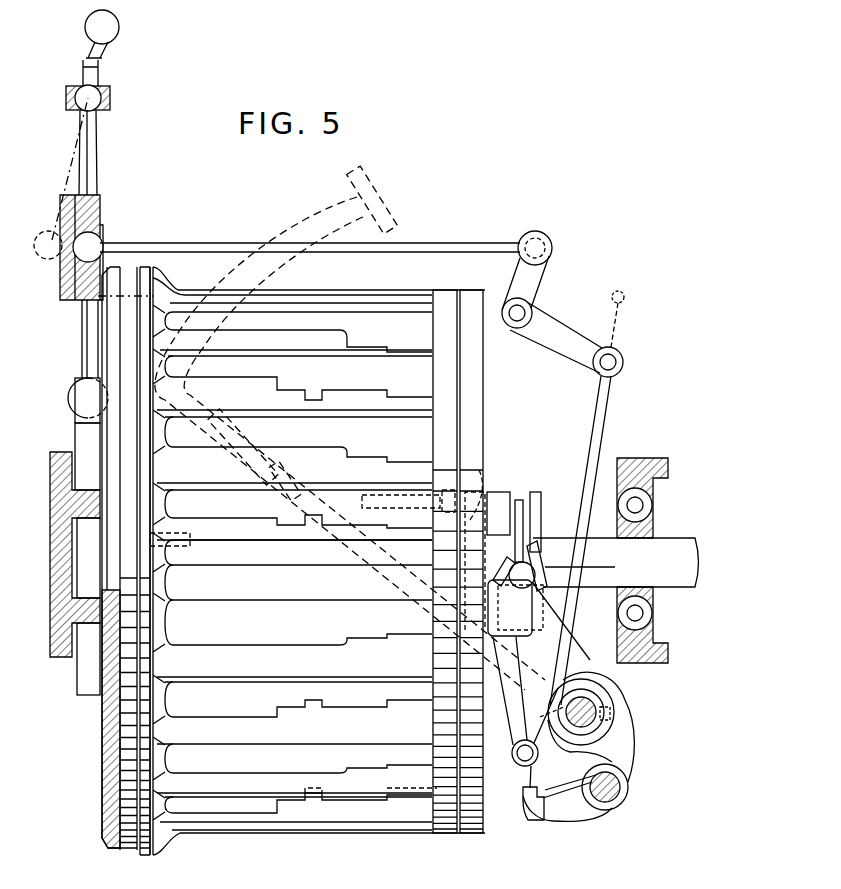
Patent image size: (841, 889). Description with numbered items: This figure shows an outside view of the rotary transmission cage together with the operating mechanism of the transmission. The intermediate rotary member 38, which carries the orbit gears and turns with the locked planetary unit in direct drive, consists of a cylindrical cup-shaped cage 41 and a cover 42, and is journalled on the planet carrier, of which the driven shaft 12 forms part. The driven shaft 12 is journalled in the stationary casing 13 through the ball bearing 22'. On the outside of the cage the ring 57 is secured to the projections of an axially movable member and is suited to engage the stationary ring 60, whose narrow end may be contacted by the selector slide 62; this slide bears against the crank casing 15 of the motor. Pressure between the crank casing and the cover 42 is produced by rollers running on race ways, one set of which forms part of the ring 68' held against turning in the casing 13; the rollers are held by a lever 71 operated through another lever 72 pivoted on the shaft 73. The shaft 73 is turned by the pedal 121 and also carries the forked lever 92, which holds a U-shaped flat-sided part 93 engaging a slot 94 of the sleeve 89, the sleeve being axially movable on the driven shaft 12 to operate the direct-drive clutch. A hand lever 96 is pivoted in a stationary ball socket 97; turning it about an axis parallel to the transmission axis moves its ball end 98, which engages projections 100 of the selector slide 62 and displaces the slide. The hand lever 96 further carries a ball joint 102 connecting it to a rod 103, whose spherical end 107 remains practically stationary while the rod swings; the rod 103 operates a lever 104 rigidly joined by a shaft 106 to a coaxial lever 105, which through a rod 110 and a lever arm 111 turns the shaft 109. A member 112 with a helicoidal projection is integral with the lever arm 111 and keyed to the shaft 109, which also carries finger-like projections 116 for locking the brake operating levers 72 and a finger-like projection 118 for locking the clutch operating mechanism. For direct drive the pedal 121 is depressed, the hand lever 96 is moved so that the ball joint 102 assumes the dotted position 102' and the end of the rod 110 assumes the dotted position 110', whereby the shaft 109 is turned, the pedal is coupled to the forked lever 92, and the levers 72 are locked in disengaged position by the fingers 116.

The hand lever 96 is at (104, 36).
The ball socket 97 is at (90, 98).
The dotted position of ball joint 102' is at (58, 178).
The ball joint 102 is at (105, 247).
The rod 103 is at (218, 247).
The pedal 121 is at (386, 203).
The spherical end of rod 107 is at (537, 252).
The lever 104 is at (530, 280).
The lever 105 is at (560, 332).
The dotted position of rod end 110' is at (648, 314).
The shaft 106 is at (517, 313).
The rod 110 is at (603, 540).
The stationary casing 13 is at (667, 463).
The ball bearing 22' is at (663, 559).
The driven shaft 12 is at (683, 553).
The projections 100 is at (93, 387).
The ball end 98 is at (70, 397).
The selector slide 62 is at (85, 443).
The crank casing 15 is at (63, 655).
The stationary ring 60 is at (113, 727).
The ring 57 is at (143, 850).
The intermediate rotary member 38 is at (293, 805).
The cage 41 is at (332, 805).
The cover 42 is at (437, 813).
The ring 68' is at (479, 577).
The lever 71 is at (520, 705).
The lever 72 is at (523, 750).
The shaft 73 is at (593, 703).
The finger like projection 118 is at (627, 720).
The member 112 is at (597, 758).
The shaft 109 is at (617, 777).
The finger like projections 116 is at (580, 817).
The lever arm 111 is at (553, 800).
The forked lever 92 is at (575, 657).
The sleeve 89 is at (497, 507).
The slot 94 is at (530, 500).
The U-shaped flat sided part 93 is at (523, 522).